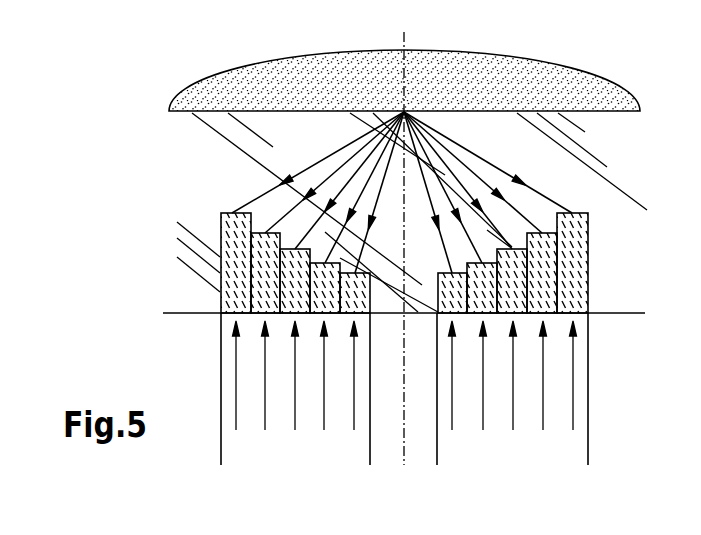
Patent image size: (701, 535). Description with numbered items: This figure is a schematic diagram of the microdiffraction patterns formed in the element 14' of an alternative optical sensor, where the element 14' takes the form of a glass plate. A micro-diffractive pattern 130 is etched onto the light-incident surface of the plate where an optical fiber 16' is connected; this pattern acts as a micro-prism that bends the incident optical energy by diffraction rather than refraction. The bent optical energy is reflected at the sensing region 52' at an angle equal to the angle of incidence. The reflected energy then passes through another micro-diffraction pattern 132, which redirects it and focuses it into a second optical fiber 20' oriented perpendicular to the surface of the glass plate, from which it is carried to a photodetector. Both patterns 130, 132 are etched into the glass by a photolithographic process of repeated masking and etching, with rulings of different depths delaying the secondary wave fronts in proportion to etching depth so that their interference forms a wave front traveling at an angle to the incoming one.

The element 14' is at (423, 93).
The sensing region 52' is at (402, 142).
The micro-diffractive pattern 130 is at (232, 212).
The micro-diffraction pattern 132 is at (589, 270).
The optical fiber 16' is at (267, 389).
The optical fiber 20' is at (548, 389).